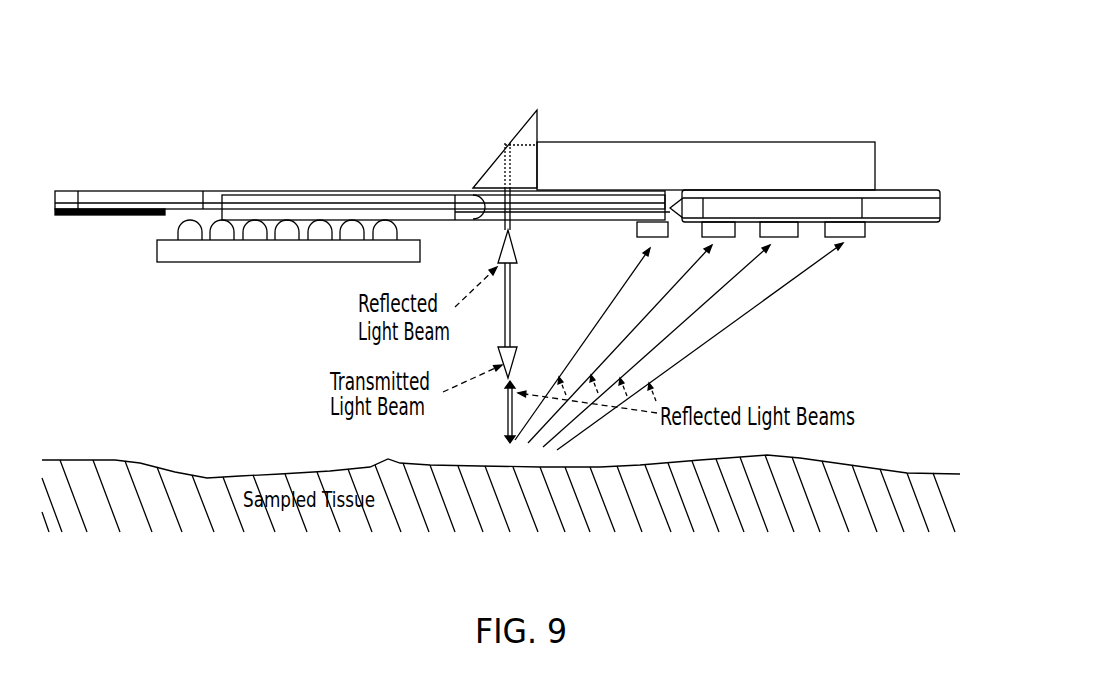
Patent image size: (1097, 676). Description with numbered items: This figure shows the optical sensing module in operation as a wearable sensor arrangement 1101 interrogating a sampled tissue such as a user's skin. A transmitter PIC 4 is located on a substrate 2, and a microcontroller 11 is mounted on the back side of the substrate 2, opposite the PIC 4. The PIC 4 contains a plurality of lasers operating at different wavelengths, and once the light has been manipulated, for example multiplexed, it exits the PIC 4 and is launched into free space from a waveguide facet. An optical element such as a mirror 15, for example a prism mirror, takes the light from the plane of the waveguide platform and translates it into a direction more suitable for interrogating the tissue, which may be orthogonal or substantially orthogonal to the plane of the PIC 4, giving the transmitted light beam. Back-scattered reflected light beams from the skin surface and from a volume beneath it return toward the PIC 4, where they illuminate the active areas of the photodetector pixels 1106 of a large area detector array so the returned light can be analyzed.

The optical sensing system 1101 is at (754, 64).
The substrate 2 is at (192, 200).
The microcontroller 11 is at (262, 256).
The mirror 15 is at (523, 133).
The transmitter PIC 4 is at (867, 150).
The photodetector pixels 1106 is at (660, 233).